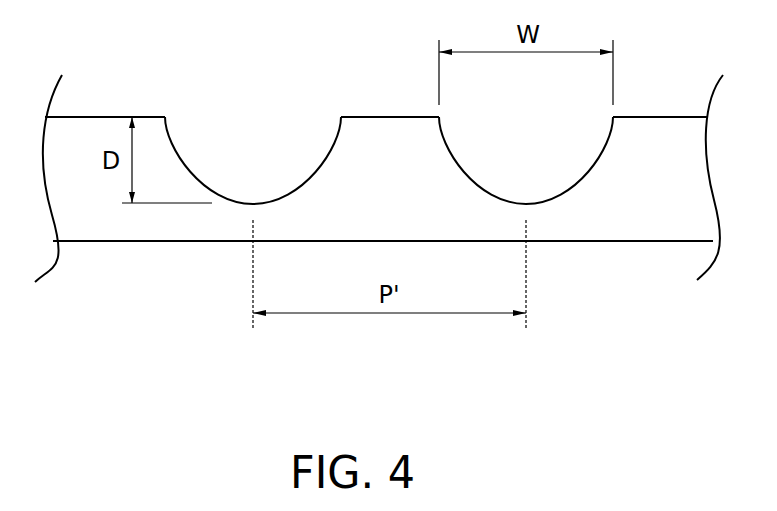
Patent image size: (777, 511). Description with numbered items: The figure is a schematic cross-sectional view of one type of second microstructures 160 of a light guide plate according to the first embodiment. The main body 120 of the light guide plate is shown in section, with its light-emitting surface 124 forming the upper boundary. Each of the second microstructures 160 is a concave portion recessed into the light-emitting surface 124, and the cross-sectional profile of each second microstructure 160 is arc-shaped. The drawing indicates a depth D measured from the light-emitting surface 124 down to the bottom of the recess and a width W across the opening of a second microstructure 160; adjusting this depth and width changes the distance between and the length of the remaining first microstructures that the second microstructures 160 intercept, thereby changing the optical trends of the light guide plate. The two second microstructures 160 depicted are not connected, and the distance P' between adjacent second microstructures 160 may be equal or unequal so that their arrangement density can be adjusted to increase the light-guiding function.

The main body 120 is at (95, 215).
The light-emitting surface 124 is at (385, 115).
The second microstructures 160 is at (187, 168).